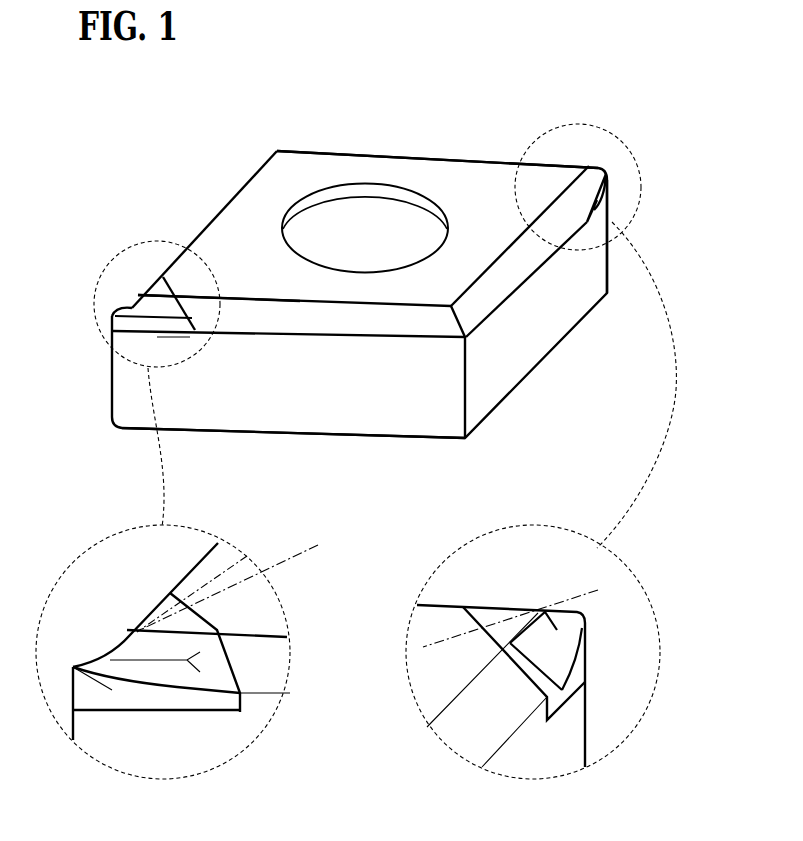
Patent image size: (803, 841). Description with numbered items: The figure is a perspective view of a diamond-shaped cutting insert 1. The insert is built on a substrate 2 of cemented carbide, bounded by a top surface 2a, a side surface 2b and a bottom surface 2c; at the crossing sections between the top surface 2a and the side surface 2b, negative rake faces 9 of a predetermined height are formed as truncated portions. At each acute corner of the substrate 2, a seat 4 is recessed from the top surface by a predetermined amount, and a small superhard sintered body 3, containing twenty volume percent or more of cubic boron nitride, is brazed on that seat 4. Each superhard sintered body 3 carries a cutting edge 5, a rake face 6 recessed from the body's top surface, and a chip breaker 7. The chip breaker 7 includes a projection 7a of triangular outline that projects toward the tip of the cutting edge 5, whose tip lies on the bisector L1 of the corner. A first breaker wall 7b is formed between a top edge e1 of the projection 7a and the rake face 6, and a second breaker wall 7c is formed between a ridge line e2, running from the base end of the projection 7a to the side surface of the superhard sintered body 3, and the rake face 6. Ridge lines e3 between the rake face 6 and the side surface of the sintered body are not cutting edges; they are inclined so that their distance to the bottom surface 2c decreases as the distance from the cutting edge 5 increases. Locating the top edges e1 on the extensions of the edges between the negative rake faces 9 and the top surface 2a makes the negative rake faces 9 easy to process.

The cutting insert 1 is at (402, 148).
The substrate 2 is at (519, 339).
The top surface 2a is at (248, 197).
The side surface 2b is at (565, 300).
The bottom surface 2c is at (298, 433).
The superhard sintered body 3 is at (605, 212).
The seat 4 is at (190, 337).
The cutting edge 5 is at (120, 307).
The rake face 6 is at (132, 303).
The chip breaker 7 is at (112, 345).
The projection 7a is at (552, 186).
The first breaker wall 7b is at (127, 293).
The second breaker wall 7c is at (195, 328).
The negative rake face 9 is at (360, 318).
The top edge of the projection e1 is at (168, 278).
The ridge line e2 is at (178, 293).
The ridge line e3 is at (157, 337).
The bisector of the corner L1 is at (379, 594).